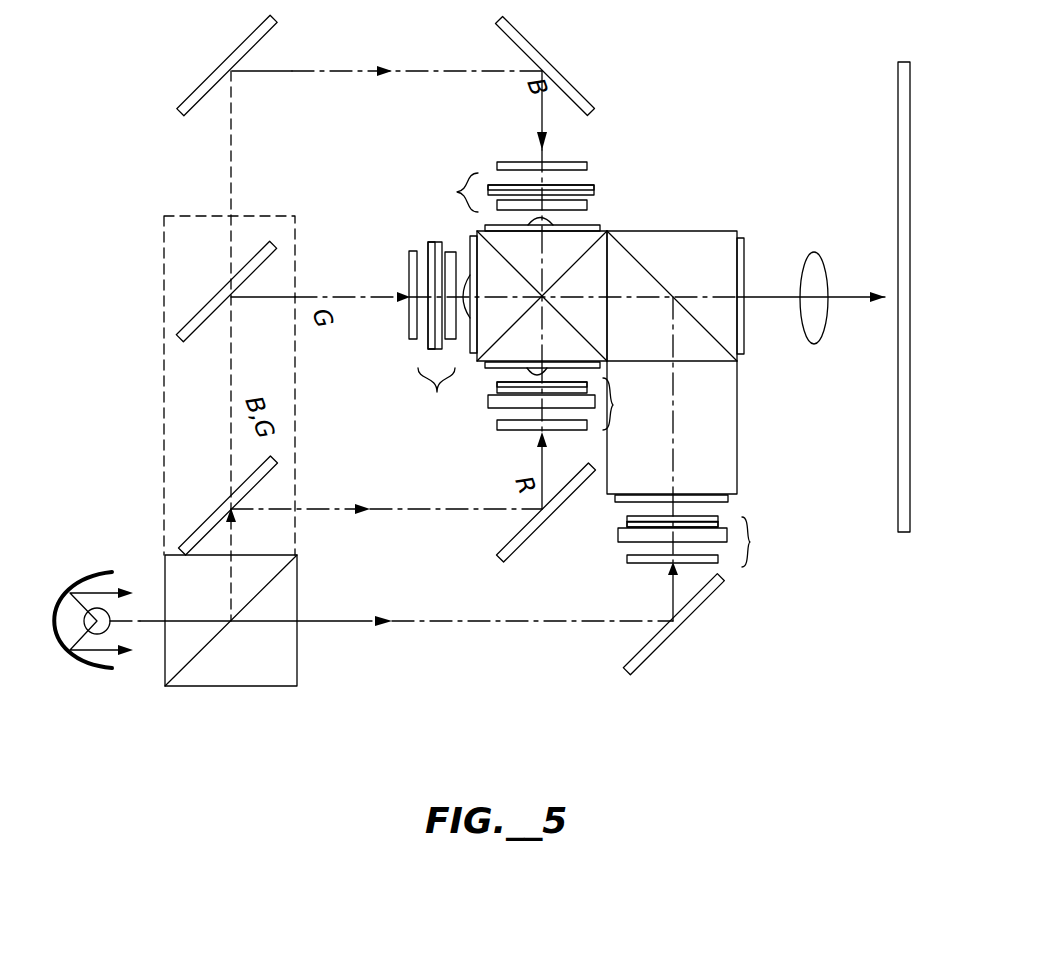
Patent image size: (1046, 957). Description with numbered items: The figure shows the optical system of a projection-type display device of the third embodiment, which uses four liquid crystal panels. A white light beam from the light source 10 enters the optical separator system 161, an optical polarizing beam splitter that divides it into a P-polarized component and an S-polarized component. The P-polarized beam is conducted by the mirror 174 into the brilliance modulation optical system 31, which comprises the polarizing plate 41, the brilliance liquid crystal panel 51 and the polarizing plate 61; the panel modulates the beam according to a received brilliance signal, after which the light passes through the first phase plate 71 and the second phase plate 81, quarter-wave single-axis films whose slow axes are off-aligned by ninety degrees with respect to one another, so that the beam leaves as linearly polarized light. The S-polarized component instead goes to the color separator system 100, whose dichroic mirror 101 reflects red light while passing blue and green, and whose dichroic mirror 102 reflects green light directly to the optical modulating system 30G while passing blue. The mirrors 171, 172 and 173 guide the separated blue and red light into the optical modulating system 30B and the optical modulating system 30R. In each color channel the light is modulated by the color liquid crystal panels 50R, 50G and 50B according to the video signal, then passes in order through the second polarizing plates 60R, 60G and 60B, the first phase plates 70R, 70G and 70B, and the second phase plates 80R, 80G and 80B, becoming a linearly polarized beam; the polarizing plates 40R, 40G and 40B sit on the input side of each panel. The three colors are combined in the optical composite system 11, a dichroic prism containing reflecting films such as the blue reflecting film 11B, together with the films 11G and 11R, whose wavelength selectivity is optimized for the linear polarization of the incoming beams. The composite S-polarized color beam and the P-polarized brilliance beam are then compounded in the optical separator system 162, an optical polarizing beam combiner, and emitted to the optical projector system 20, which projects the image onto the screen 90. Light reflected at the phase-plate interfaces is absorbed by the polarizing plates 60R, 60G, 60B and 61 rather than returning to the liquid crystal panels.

The light source 10 is at (83, 663).
The optical projector system 20 is at (825, 265).
The screen 90 is at (898, 100).
The color separator system 100 is at (165, 437).
The dichroic mirror 101 is at (198, 520).
The dichroic mirror 102 is at (210, 297).
The optical separator system 161 is at (213, 687).
The optical separator system 162 is at (737, 418).
The mirror 171 is at (250, 30).
The mirror 172 is at (528, 36).
The mirror 173 is at (530, 540).
The mirror 174 is at (665, 645).
The optical composite system 11 is at (597, 260).
The blue reflecting film 11B is at (528, 222).
The green reflecting dichroic surface 11G is at (470, 267).
The red reflecting dichroic surface 11R is at (548, 365).
The optical modulating system 30B is at (457, 192).
The blue polarizer 40B is at (587, 162).
The color liquid crystal panel 50B is at (497, 187).
The second polarizing plate 60B is at (594, 190).
The first phase plate 70B is at (587, 204).
The second phase plate 80B is at (487, 225).
The optical modulating system 30G is at (437, 392).
The green polarizer 40G is at (409, 277).
The color liquid crystal panel 50G is at (430, 243).
The second polarizing plate 60G is at (445, 320).
The first phase plate 70G is at (455, 345).
The second phase plate 80G is at (467, 355).
The optical modulating system 30R is at (613, 405).
The red polarizer 40R is at (510, 430).
The color liquid crystal panel 50R is at (588, 393).
The second polarizing plate 60R is at (488, 408).
The first phase plate 70R is at (497, 390).
The second phase plate 80R is at (600, 366).
The brilliance modulation optical system 31 is at (750, 542).
The polarizing plate 41 is at (630, 563).
The brilliance liquid crystal panel 51 is at (627, 540).
The polarizing plate 61 is at (618, 535).
The first phase plate 71 is at (718, 518).
The second phase plate 81 is at (728, 497).